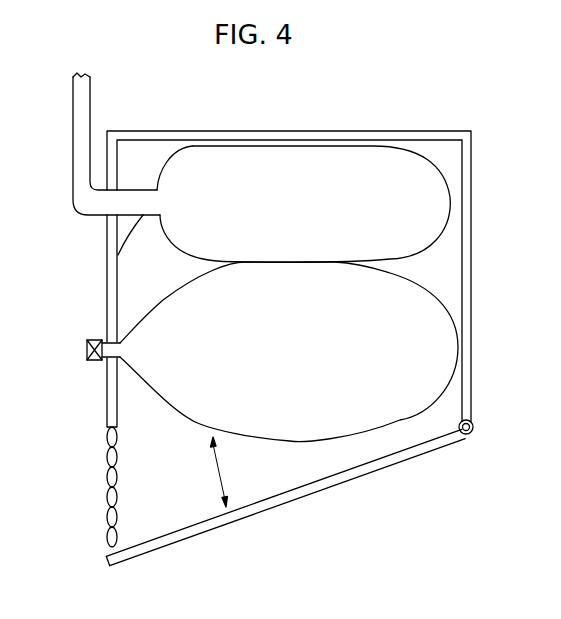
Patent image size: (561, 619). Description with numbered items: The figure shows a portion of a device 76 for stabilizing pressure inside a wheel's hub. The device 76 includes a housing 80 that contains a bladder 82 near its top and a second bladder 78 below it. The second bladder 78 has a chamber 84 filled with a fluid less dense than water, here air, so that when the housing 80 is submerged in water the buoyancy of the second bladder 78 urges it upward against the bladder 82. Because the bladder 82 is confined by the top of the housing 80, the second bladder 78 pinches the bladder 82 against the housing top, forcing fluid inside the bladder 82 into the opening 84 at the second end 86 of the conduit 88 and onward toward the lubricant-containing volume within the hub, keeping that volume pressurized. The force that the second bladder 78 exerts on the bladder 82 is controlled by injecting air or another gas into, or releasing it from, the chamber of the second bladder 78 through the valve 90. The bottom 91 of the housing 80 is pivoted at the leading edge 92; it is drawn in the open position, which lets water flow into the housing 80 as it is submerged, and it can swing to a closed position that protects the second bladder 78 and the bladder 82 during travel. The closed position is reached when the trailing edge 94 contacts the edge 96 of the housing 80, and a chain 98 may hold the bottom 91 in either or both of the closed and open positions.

The device 76 is at (384, 72).
The second bladder 78 is at (196, 421).
The housing 80 is at (177, 131).
The bladder 82 is at (375, 157).
The opening 84 is at (160, 202).
The second end 86 is at (118, 251).
The conduit 88 is at (90, 112).
The valve 90 is at (90, 340).
The bottom 91 is at (293, 497).
The leading edge 92 is at (472, 434).
The trailing edge 94 is at (105, 552).
The edge 96 is at (105, 437).
The chain 98 is at (105, 520).